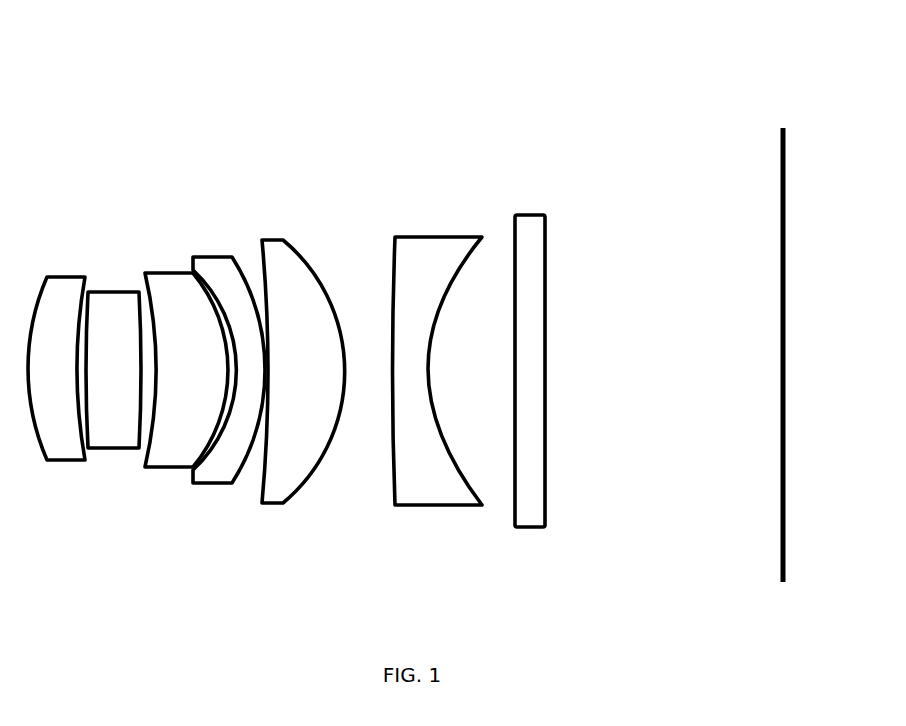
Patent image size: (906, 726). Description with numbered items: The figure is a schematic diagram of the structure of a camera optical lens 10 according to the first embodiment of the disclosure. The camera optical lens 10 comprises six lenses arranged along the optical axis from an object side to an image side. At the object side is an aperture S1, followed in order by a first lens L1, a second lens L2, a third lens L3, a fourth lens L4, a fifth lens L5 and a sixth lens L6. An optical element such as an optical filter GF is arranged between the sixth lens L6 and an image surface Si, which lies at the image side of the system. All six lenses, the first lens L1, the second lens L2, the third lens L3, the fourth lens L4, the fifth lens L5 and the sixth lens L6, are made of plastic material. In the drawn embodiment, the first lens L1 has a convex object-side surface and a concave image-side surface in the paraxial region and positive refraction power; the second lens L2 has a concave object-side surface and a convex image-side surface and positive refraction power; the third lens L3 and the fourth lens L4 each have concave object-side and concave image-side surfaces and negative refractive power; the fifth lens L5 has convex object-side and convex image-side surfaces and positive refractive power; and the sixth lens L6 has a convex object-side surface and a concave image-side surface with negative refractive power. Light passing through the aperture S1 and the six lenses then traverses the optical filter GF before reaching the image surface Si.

The camera optical lens 10 is at (436, 98).
The first lens L1 is at (56, 357).
The aperture S1 is at (88, 280).
The second lens L2 is at (113, 357).
The third lens L3 is at (186, 358).
The fourth lens L4 is at (229, 359).
The fifth lens L5 is at (303, 359).
The sixth lens L6 is at (437, 357).
The optical filter GF is at (530, 357).
The image surface Si is at (783, 344).